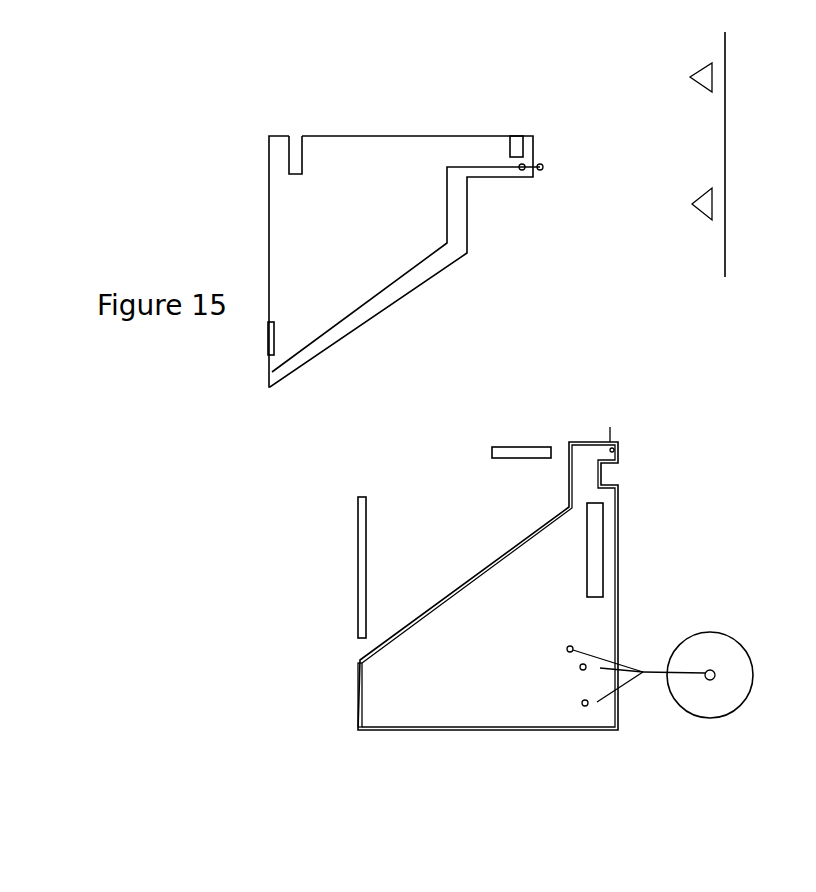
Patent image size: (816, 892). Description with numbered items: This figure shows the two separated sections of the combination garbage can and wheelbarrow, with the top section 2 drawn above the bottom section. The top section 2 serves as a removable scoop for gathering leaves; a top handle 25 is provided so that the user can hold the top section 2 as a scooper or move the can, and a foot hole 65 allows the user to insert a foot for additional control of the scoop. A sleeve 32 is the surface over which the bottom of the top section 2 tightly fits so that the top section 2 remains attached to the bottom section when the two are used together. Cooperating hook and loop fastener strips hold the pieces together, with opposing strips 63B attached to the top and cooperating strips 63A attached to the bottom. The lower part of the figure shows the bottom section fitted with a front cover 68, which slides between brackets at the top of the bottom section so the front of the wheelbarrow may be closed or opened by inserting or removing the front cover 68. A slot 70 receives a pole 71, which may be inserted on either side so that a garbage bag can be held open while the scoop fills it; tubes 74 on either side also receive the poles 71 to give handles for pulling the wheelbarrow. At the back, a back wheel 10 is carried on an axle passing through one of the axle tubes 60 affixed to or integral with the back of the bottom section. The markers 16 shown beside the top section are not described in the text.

The top section 2 is at (345, 150).
The top handle 25 is at (522, 145).
The foot hole 65 is at (294, 158).
The guide rail markers 16 is at (674, 154).
The sleeve 32 is at (345, 327).
The opposing strips 63B is at (268, 334).
The front cover 68 is at (503, 452).
The slot 70 is at (365, 692).
The cooperating strips 63A is at (358, 676).
The tubes 74 is at (592, 537).
The pole 71 is at (358, 582).
The axle tubes 60 is at (568, 652).
The back wheel 10 is at (710, 713).